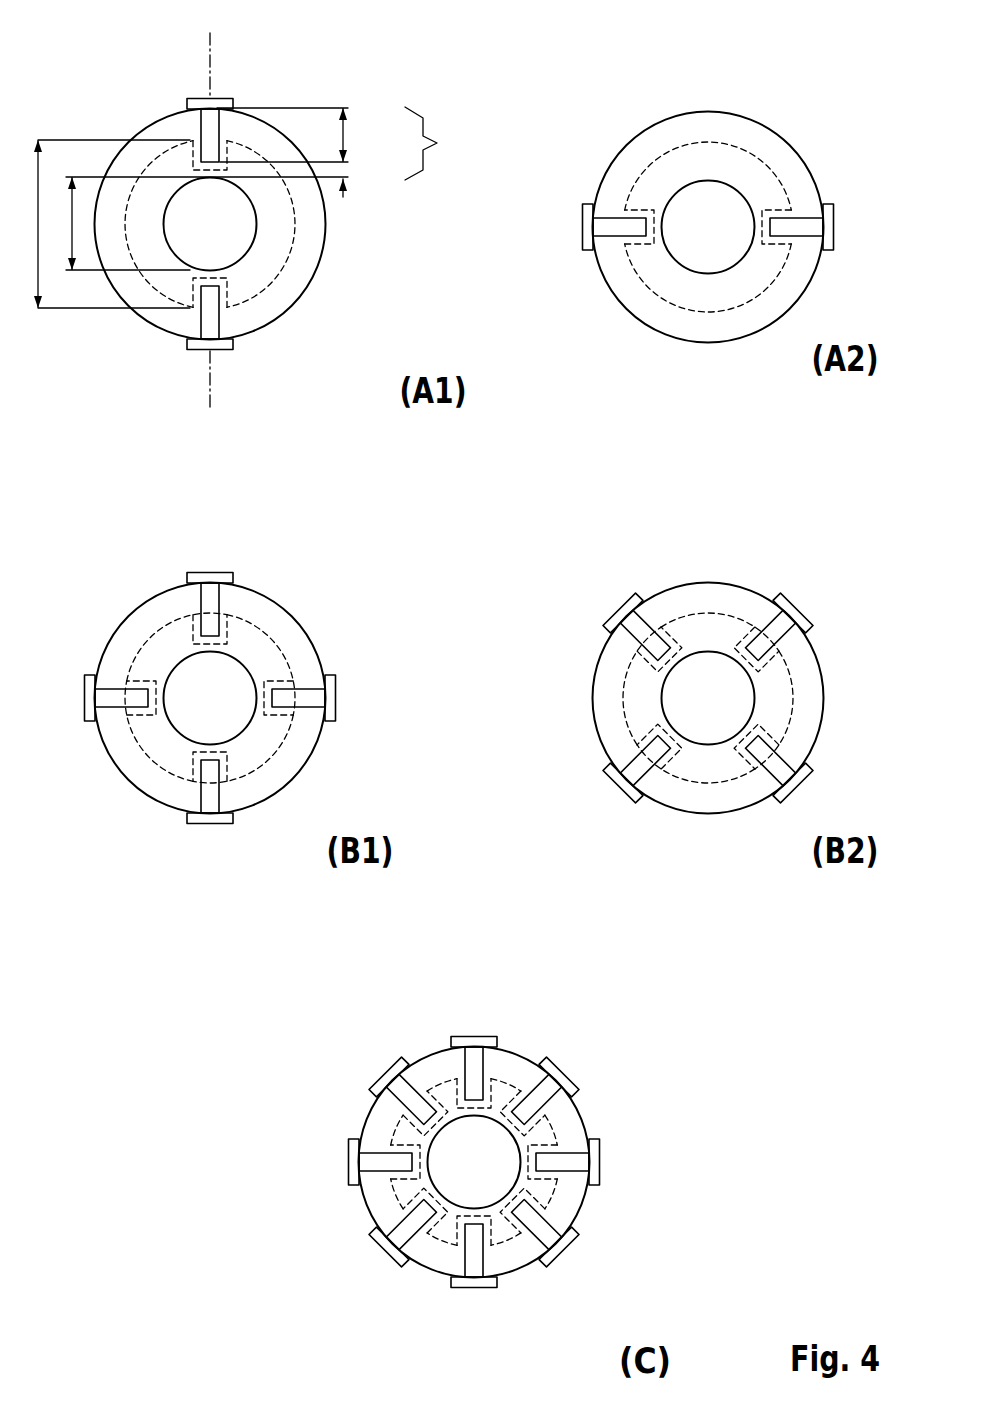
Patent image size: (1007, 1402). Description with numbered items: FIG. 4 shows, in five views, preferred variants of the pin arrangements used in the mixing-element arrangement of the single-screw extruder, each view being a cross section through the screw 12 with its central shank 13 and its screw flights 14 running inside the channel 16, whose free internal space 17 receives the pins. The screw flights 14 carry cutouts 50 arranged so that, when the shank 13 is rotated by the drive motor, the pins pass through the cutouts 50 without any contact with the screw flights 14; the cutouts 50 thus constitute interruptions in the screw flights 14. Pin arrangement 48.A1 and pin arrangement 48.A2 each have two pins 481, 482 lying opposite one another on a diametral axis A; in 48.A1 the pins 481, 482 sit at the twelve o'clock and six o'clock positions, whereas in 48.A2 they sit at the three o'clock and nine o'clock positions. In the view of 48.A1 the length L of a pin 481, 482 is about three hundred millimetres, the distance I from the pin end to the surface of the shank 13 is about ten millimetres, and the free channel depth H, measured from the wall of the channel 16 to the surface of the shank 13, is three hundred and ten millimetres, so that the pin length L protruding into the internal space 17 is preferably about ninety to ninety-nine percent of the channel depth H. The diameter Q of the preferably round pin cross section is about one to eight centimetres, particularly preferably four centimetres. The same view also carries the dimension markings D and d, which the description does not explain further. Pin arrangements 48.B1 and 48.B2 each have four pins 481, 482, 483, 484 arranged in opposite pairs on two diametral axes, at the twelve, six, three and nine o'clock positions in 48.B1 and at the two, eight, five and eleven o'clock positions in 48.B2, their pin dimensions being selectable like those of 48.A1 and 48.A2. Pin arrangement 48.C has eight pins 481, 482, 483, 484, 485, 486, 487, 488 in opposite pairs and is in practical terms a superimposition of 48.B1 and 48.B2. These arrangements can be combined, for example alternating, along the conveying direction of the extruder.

The screw 12 is at (315, 222).
The shank 13 is at (197, 239).
The screw flights 14 is at (277, 237).
The channel 16 is at (293, 305).
The internal space 17 is at (295, 275).
The cutouts 50 is at (200, 128).
The pin 481 is at (213, 125).
The pin 482 is at (213, 320).
The pin 483 is at (305, 693).
The pin 484 is at (110, 693).
The pin 485 is at (550, 1093).
The pin 486 is at (400, 1220).
The pin 487 is at (533, 1240).
The pin 488 is at (420, 1080).
The pin arrangement 48.A1 is at (344, 72).
The pin arrangement 48.A2 is at (812, 97).
The pin arrangement 48.B1 is at (307, 583).
The pin arrangement 48.B2 is at (815, 573).
The pin arrangement 48.C is at (600, 1051).
The diametral axis A is at (210, 48).
The diameter Q is at (192, 146).
The core diameter D is at (102, 224).
The opening diameter d is at (199, 223).
The length L is at (348, 137).
The distance I is at (348, 172).
The channel depth H is at (433, 143).